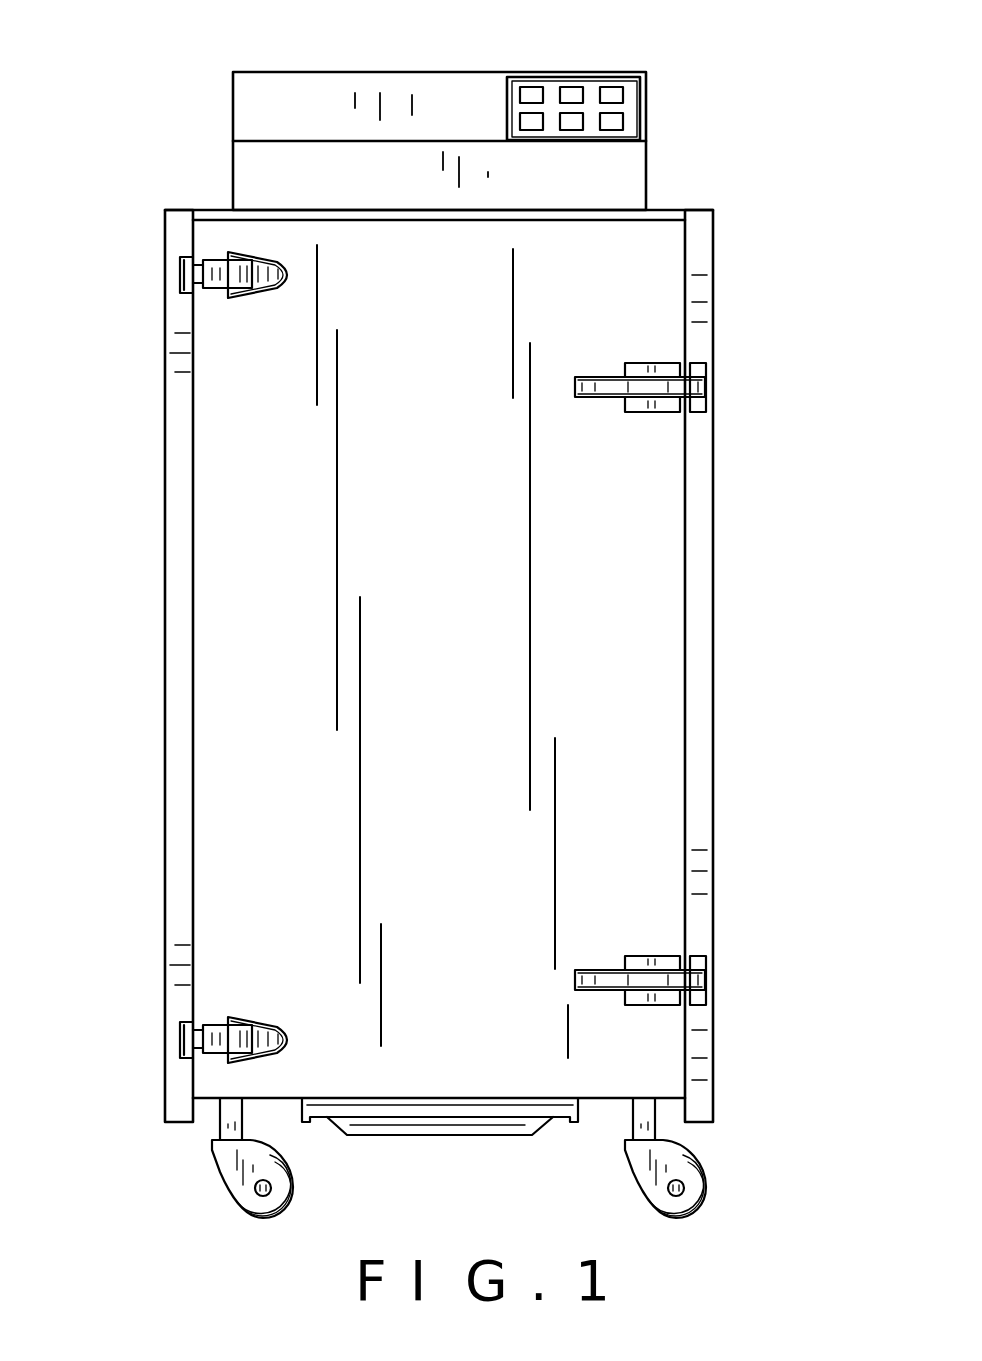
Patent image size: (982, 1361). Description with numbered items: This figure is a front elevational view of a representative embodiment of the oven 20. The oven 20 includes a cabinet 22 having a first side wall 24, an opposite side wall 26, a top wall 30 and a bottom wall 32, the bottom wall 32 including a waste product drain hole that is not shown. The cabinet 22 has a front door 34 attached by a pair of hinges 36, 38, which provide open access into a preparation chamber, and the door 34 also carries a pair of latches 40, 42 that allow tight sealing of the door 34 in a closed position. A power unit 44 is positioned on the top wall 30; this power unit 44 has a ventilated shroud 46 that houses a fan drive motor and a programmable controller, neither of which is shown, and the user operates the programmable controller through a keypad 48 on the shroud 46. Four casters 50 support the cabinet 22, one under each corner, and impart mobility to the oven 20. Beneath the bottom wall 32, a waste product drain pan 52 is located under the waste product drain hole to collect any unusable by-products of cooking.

The oven 20 is at (750, 502).
The cabinet 22 is at (716, 723).
The first side wall 24 is at (165, 547).
The opposite side wall 26 is at (712, 863).
The top wall 30 is at (665, 210).
The bottom wall 32 is at (605, 1100).
The front door 34 is at (391, 769).
The hinge 36 is at (227, 270).
The hinge 38 is at (227, 1037).
The latch 40 is at (685, 383).
The latch 42 is at (703, 978).
The power unit 44 is at (358, 58).
The ventilated shroud 46 is at (442, 98).
The keypad 48 is at (635, 103).
The casters 50 is at (267, 1220).
The waste product drain pan 52 is at (464, 1138).